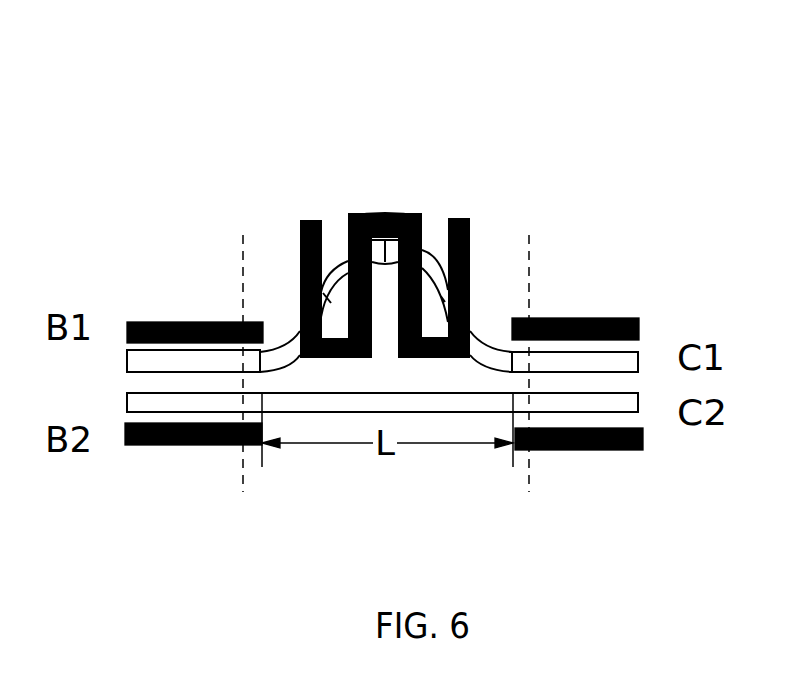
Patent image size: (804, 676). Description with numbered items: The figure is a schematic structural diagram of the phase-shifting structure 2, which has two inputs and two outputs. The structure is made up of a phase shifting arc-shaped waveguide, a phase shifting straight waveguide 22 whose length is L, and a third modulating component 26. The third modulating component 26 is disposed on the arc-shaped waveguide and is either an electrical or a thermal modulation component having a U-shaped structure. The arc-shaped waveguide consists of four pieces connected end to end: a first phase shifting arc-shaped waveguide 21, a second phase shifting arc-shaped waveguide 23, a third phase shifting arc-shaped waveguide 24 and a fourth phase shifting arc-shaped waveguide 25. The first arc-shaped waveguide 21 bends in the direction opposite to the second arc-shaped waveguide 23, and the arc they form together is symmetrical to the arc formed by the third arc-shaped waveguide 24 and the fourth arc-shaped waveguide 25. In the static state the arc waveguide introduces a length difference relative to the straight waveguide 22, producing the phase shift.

The phase-shifting structure 2 is at (318, 138).
The first phase shifting arc-shaped waveguide 21 is at (285, 348).
The phase shifting straight waveguide 22 is at (281, 405).
The second phase shifting arc-shaped waveguide 23 is at (340, 259).
The third phase shifting arc-shaped waveguide 24 is at (431, 262).
The fourth phase shifting arc-shaped waveguide 25 is at (487, 348).
The third modulating component 26 is at (427, 358).